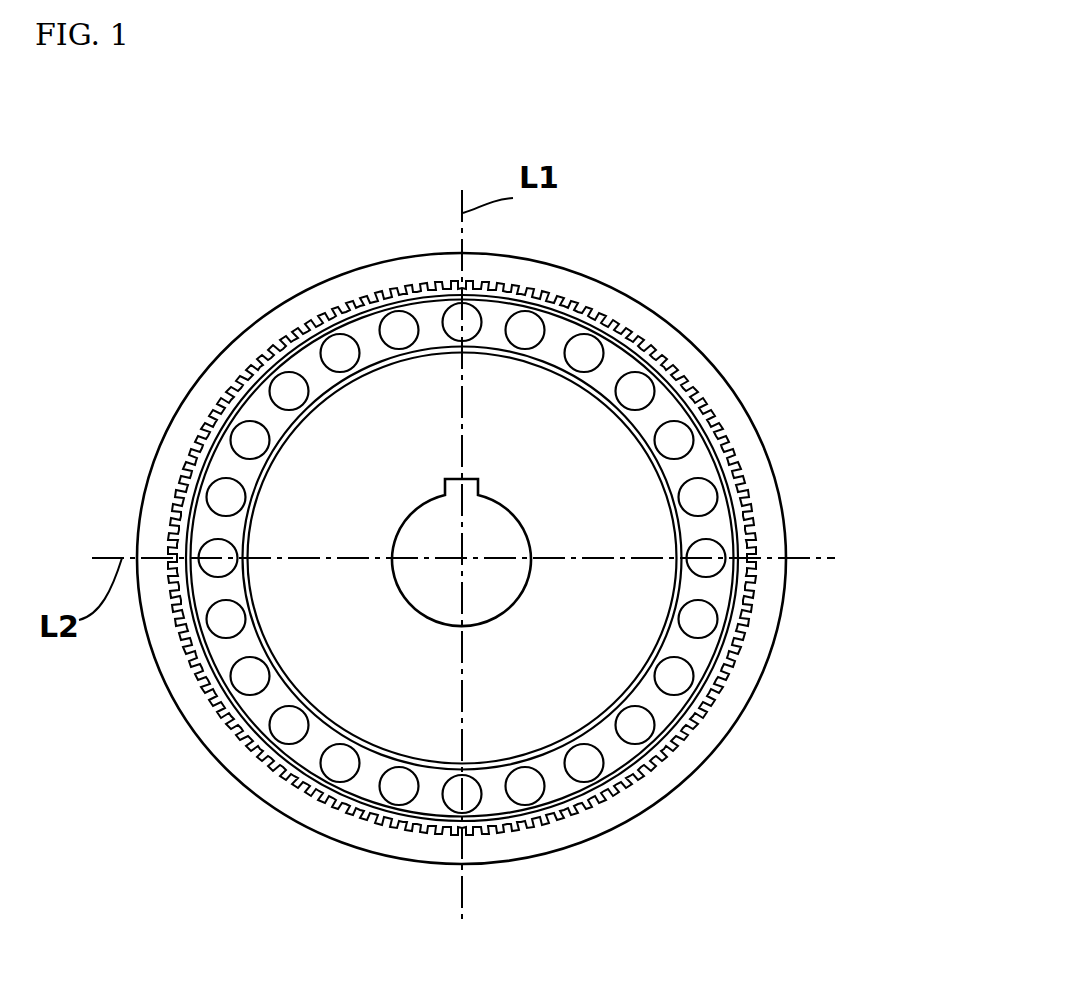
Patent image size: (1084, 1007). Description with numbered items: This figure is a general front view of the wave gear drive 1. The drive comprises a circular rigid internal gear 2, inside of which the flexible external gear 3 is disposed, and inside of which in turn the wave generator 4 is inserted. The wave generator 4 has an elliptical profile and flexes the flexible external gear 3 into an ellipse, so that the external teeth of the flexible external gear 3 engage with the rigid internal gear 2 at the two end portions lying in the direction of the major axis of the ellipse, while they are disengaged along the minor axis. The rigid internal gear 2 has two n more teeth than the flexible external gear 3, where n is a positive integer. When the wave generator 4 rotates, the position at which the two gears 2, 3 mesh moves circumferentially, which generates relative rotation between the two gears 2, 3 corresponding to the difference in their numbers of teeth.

The wave gear drive 1 is at (703, 245).
The rigid internal gear 2 is at (710, 378).
The flexible external gear 3 is at (723, 448).
The wave generator 4 is at (627, 520).